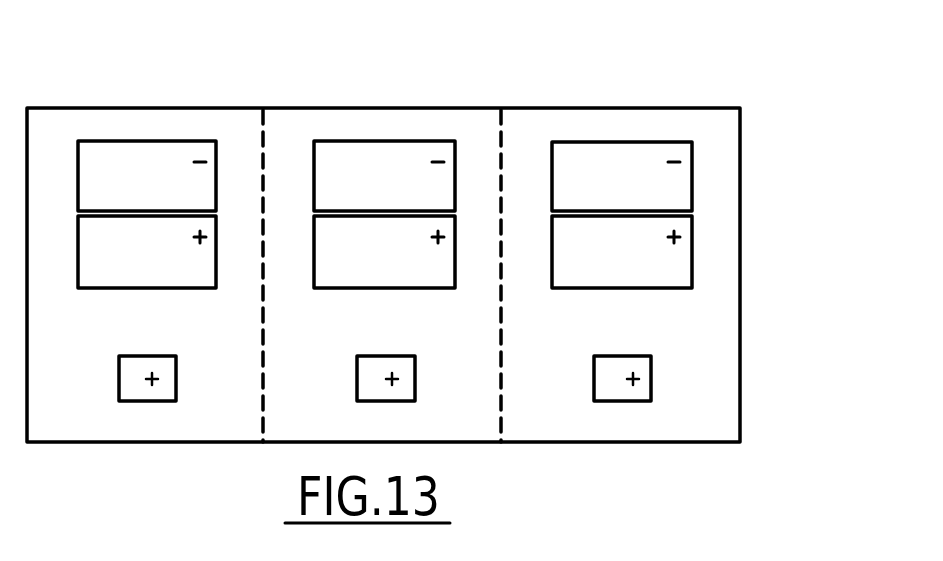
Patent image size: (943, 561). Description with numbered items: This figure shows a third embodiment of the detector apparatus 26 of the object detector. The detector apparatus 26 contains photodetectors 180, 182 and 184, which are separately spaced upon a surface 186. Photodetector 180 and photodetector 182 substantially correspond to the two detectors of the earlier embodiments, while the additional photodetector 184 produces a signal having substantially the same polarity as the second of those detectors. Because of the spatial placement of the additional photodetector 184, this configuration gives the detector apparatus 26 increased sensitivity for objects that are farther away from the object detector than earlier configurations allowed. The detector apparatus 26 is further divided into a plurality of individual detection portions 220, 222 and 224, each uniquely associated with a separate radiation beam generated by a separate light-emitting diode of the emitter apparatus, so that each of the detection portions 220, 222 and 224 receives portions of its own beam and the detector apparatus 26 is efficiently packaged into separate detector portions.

The detector apparatus 26 is at (670, 72).
The photodetector 180 is at (615, 150).
The photodetector 182 is at (622, 280).
The photodetector 184 is at (651, 372).
The surface 186 is at (730, 265).
The detection portion 220 is at (626, 231).
The detection portion 222 is at (415, 333).
The detection portion 224 is at (168, 333).